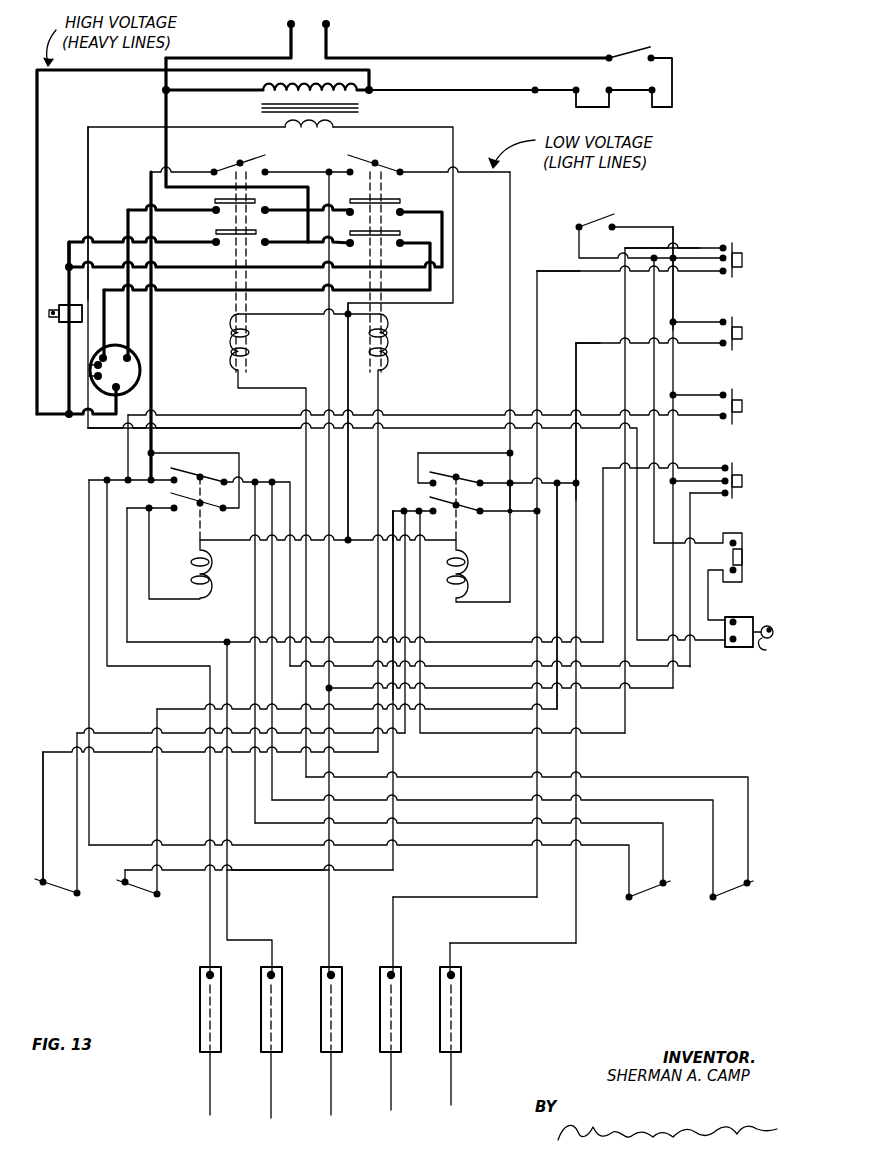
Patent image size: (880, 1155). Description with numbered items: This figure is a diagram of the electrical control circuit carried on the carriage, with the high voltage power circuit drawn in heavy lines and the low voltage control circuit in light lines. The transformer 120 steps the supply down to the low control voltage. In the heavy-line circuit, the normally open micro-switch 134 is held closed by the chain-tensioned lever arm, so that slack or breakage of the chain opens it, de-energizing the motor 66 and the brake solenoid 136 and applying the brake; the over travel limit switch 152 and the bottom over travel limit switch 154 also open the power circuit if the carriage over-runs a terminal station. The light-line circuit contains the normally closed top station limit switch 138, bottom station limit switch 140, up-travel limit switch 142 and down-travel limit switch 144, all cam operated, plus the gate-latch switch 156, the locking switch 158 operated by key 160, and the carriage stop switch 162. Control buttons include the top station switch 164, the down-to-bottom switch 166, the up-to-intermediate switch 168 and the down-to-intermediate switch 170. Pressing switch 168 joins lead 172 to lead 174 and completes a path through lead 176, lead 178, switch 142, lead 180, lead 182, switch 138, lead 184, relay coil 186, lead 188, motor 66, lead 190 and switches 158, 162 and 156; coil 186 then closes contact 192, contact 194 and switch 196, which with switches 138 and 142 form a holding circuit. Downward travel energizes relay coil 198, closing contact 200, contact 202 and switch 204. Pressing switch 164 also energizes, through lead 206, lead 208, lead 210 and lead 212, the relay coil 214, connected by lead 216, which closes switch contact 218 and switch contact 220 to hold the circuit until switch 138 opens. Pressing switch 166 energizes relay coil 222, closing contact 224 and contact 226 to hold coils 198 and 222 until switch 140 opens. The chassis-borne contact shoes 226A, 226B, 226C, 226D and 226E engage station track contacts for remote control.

The motor 66 is at (132, 366).
The transformer 120 is at (356, 105).
The micro-switch 134 is at (638, 42).
The brake solenoid 136 is at (66, 326).
The top station limit switch 138 is at (70, 896).
The bottom station limit switch 140 is at (734, 900).
The up-travel limit switch 142 is at (138, 890).
The down-travel limit switch 144 is at (650, 900).
The over travel limit switch 152 is at (562, 84).
The bottom over travel limit switch 154 is at (652, 84).
The switch 156 is at (595, 222).
The locking switch 158 is at (748, 618).
The key 160 is at (774, 646).
The carriage stop switch 162 is at (744, 558).
The top station switch 164 is at (742, 254).
The switch 166 is at (744, 478).
The switch 168 is at (742, 333).
The switch 170 is at (742, 404).
The lead 172 is at (674, 312).
The lead 174 is at (606, 322).
The lead 176 is at (570, 470).
The lead 178 is at (557, 606).
The lead 180 is at (295, 872).
The lead 182 is at (404, 583).
The lead 184 is at (60, 735).
The relay coil 186 is at (388, 330).
The lead 188 is at (128, 103).
The lead 190 is at (104, 428).
The contact 192 is at (398, 232).
The contact 194 is at (398, 200).
The switch 196 is at (381, 164).
The relay coil 198 is at (252, 355).
The contact 200 is at (256, 233).
The contact 202 is at (256, 202).
The switch 204 is at (260, 152).
The lead 206 is at (697, 248).
The lead 208 is at (418, 495).
The lead 210 is at (564, 270).
The lead 212 is at (528, 495).
The relay coil 214 is at (452, 598).
The lead 216 is at (348, 472).
The switch contact 218 is at (458, 504).
The switch contact 220 is at (462, 476).
The relay coil 222 is at (212, 595).
The contact 224 is at (190, 508).
The contact 226 is at (190, 476).
The contact shoe 226A is at (200, 1030).
The contact shoe 226B is at (264, 1038).
The contact shoe 226C is at (322, 1040).
The contact shoe 226D is at (382, 1043).
The contact shoe 226E is at (441, 1045).